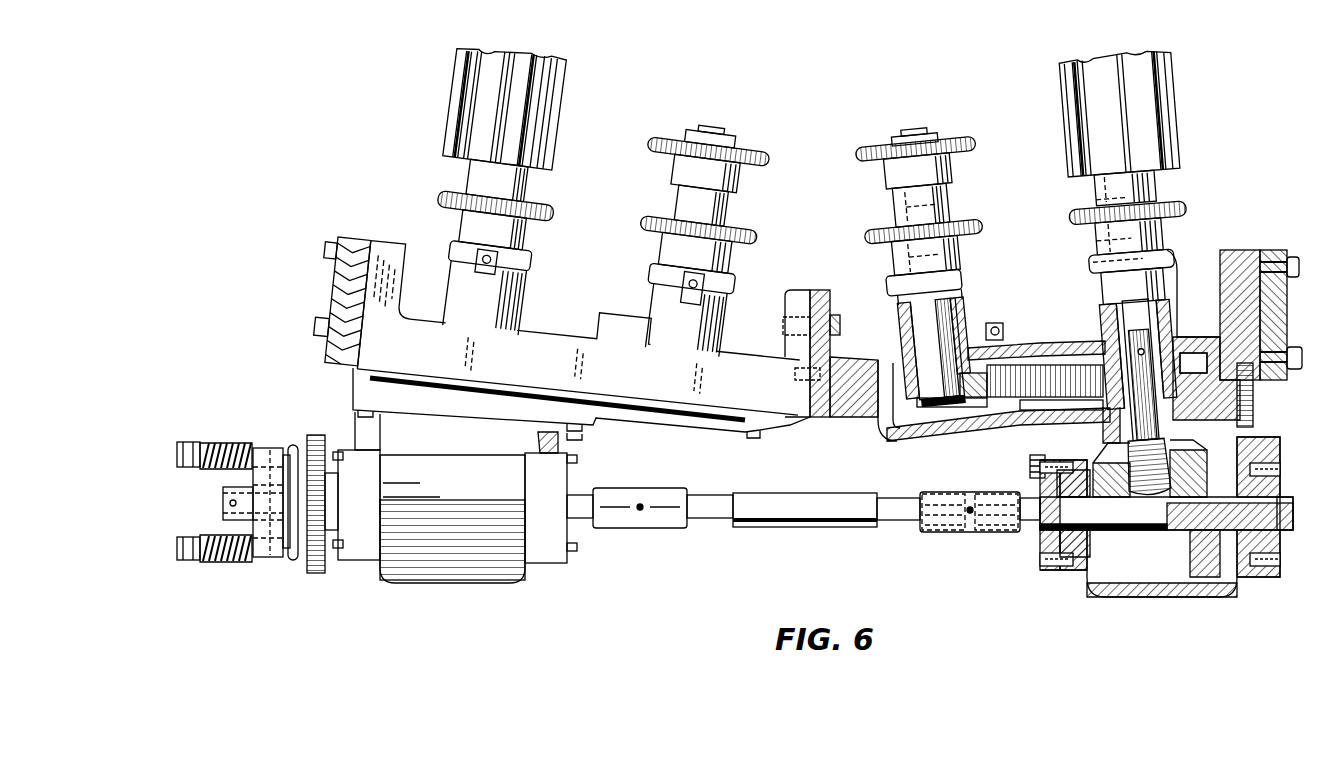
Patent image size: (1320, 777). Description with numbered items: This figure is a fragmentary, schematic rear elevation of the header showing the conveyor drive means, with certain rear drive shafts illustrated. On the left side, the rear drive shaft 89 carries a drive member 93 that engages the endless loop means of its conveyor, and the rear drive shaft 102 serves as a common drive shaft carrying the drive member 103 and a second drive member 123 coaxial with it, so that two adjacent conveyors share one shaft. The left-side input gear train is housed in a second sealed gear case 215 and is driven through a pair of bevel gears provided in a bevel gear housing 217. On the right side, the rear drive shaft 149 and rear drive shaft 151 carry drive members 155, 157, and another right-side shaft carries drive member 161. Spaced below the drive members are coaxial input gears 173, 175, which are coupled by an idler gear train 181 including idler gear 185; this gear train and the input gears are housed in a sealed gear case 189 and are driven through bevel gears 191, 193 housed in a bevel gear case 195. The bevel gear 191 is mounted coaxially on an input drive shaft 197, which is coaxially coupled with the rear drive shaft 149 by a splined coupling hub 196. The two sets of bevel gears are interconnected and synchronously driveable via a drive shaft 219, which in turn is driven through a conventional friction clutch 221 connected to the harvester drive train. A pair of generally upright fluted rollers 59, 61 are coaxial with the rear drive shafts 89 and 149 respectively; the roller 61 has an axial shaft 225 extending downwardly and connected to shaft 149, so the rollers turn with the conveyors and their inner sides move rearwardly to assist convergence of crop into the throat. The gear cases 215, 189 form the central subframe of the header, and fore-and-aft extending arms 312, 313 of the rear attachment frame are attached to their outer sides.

The fluted roller 59 is at (457, 84).
The fluted roller 61 is at (1170, 137).
The rear drive shaft 89 is at (524, 184).
The drive member 93 is at (438, 198).
The rear drive shaft 102 is at (716, 205).
The drive member 103 is at (752, 237).
The second drive member 123 is at (660, 135).
The rear drive shaft 149 is at (1193, 262).
The rear drive shaft 151 is at (960, 262).
The drive member 155 is at (1205, 193).
The drive member 157 is at (987, 233).
The drive member 161 is at (870, 143).
The input gear 173 is at (1190, 355).
The input gear 175 is at (903, 395).
The idler gear train 181 is at (1027, 338).
The idler gear 185 is at (988, 420).
The sealed gear case 189 is at (1040, 340).
The bevel gear 191 is at (1030, 453).
The bevel gear 193 is at (1207, 580).
The bevel gear case 195 is at (1115, 595).
The splined coupling hub 196 is at (1103, 340).
The input drive shaft 197 is at (1158, 485).
The second sealed gear case 215 is at (541, 365).
The bevel gear housing 217 is at (455, 465).
The drive shaft 219 is at (795, 507).
The friction clutch 221 is at (270, 450).
The axial shaft 225 is at (1105, 186).
The arm 312 is at (330, 262).
The arm 313 is at (1267, 250).